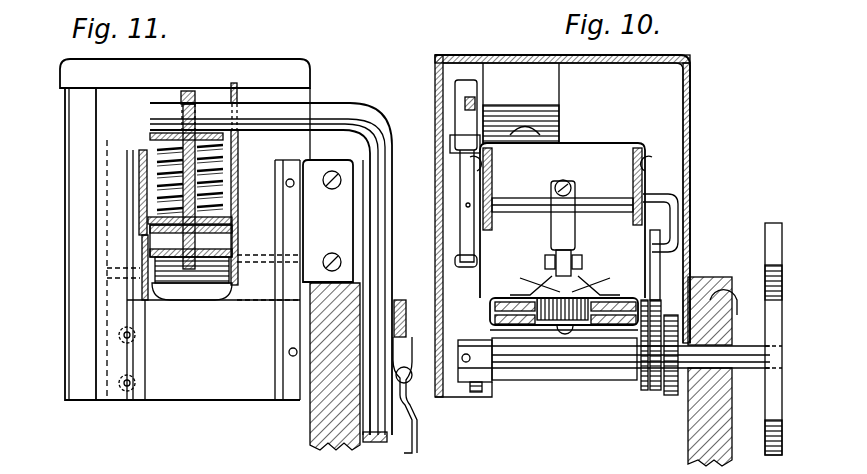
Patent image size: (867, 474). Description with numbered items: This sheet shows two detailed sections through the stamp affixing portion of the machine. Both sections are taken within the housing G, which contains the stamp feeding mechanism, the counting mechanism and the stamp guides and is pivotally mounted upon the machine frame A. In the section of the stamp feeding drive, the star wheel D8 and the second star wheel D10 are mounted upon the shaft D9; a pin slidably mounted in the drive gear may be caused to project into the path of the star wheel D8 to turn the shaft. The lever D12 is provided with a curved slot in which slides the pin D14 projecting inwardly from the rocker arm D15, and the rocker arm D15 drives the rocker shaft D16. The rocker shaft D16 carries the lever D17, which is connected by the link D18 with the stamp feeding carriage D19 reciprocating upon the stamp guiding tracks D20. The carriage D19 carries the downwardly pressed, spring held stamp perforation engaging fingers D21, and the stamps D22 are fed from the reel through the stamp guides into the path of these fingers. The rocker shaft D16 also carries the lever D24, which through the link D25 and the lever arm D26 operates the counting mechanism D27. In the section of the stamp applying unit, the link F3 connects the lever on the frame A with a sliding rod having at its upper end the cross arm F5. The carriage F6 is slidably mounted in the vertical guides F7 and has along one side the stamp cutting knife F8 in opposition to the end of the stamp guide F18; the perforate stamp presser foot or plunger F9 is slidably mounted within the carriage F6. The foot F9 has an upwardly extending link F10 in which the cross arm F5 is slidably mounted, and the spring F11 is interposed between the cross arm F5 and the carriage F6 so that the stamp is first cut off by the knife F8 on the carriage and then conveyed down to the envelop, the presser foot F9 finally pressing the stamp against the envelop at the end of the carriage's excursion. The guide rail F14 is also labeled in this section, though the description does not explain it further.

In FIG. 11, the housing G is at (277, 70).
In FIG. 10, the housing G is at (672, 93).
In FIG. 11, the side frame A is at (322, 423).
In FIG. 10, the side frame A is at (700, 448).
In FIG. 11, the link F3 is at (414, 446).
In FIG. 11, the cross arm F5 is at (325, 108).
In FIG. 11, the carriage F6 is at (140, 178).
In FIG. 11, the vertical guides F7 is at (262, 222).
In FIG. 11, the stamp cutting knife F8 is at (214, 290).
In FIG. 11, the stamp presser foot F9 is at (192, 290).
In FIG. 11, the link F10 is at (188, 92).
In FIG. 11, the spring F11 is at (162, 165).
In FIG. 11, the guide rail F14 is at (380, 210).
In FIG. 11, the stamp guide F18 is at (166, 290).
In FIG. 10, the star wheel D8 is at (774, 225).
In FIG. 10, the shaft D9 is at (568, 362).
In FIG. 10, the star wheel D10 is at (670, 396).
In FIG. 10, the lever D12 is at (655, 305).
In FIG. 10, the pin D14 is at (658, 268).
In FIG. 10, the rocker arm D15 is at (676, 215).
In FIG. 10, the rocker shaft D16 is at (600, 200).
In FIG. 10, the lever D17 is at (555, 195).
In FIG. 10, the link D18 is at (556, 258).
In FIG. 10, the stamp feeding carriage D19 is at (606, 292).
In FIG. 10, the stamp guiding tracks D20 is at (500, 310).
In FIG. 10, the stamp perforation engaging fingers D21 is at (548, 264).
In FIG. 10, the stamps D22 is at (556, 322).
In FIG. 10, the lever D24 is at (465, 228).
In FIG. 10, the link D25 is at (455, 172).
In FIG. 10, the lever arm D26 is at (460, 120).
In FIG. 10, the counting mechanism D27 is at (548, 100).